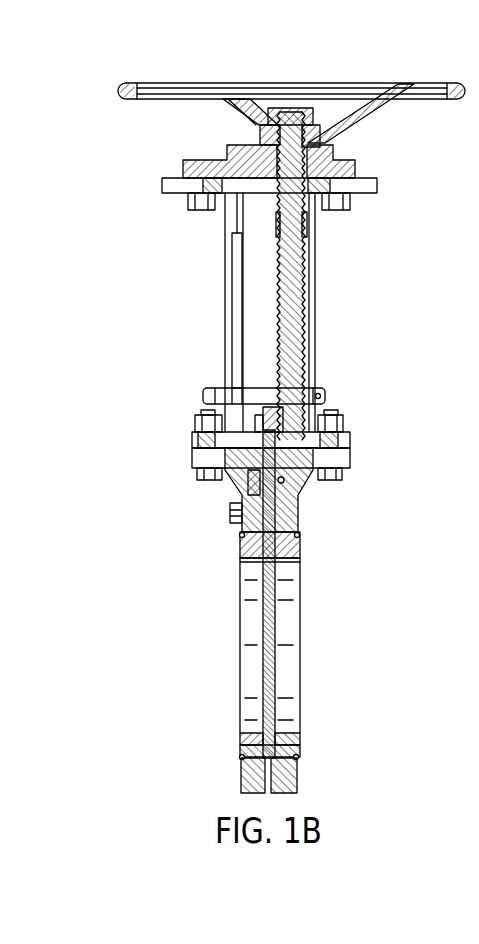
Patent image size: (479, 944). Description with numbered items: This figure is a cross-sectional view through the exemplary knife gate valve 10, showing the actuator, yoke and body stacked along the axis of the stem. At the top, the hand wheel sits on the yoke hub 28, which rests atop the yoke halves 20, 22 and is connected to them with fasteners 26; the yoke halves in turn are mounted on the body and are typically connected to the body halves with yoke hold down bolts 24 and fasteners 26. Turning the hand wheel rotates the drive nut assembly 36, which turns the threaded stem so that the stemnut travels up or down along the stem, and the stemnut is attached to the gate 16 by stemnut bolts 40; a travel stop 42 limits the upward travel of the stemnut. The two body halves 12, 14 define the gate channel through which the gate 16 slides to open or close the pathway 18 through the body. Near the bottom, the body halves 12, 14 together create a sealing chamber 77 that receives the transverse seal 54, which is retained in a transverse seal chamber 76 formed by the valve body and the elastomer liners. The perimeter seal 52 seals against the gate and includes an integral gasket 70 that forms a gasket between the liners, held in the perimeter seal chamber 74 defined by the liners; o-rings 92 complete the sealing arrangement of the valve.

The knife gate valve 10 is at (382, 256).
The body half 12 is at (240, 535).
The body half 14 is at (298, 531).
The gate 16 is at (278, 626).
The pathway 18 is at (322, 673).
The yoke half 20 is at (224, 304).
The yoke half 22 is at (316, 291).
The yoke hold down bolts 24 is at (200, 481).
The fasteners 26 is at (195, 425).
The yoke hub 28 is at (238, 144).
The drive nut assembly 36 is at (273, 181).
The stemnut bolts 40 is at (258, 410).
The travel stop 42 is at (276, 233).
The perimeter seal 52 is at (254, 740).
The transverse seal 54 is at (294, 480).
The integral gasket 70 is at (262, 750).
The perimeter seal chamber 74 is at (282, 748).
The transverse seal chamber 76 is at (256, 478).
The sealing chamber 77 is at (258, 556).
The o-rings 92 is at (298, 760).